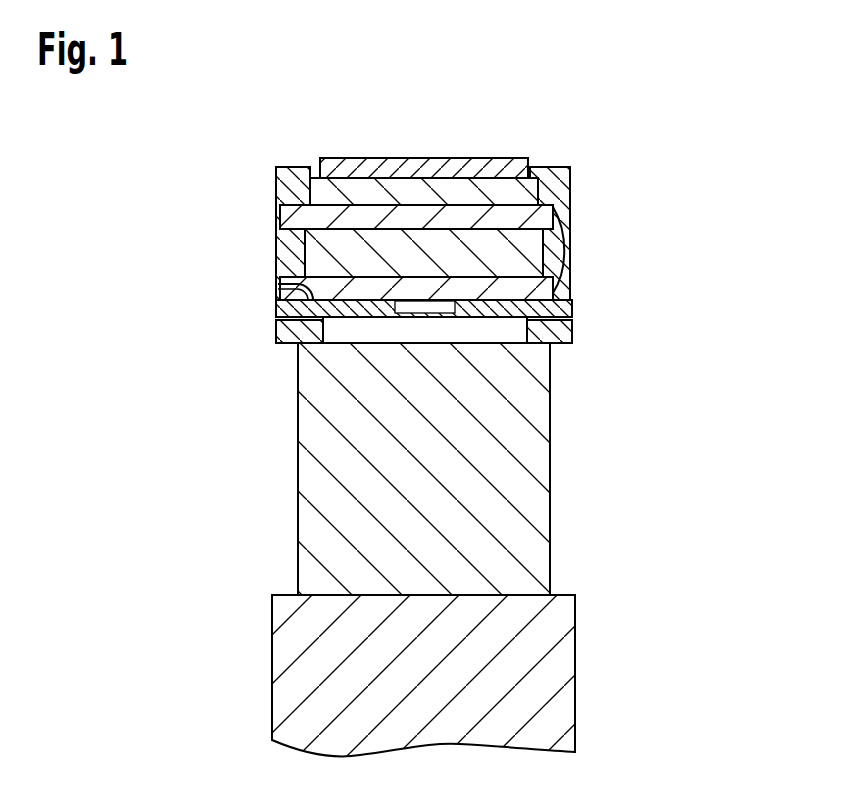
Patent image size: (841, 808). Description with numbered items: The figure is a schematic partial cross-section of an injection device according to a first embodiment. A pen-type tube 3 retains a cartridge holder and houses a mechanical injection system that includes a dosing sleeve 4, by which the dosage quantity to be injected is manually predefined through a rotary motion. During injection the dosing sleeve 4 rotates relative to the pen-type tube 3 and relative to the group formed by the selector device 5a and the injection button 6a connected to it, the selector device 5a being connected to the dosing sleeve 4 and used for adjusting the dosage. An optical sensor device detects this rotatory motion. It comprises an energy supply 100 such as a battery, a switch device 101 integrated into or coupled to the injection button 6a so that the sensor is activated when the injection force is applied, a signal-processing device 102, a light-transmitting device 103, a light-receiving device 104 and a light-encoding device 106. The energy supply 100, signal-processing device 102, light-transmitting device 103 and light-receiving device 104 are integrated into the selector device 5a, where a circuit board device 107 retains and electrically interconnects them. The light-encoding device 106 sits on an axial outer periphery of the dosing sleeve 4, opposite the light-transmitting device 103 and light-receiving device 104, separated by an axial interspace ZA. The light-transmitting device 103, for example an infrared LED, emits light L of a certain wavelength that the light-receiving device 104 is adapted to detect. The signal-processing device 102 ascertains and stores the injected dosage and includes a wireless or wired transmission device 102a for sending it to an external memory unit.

The pen-type tube 3 is at (300, 651).
The dosing sleeve 4 is at (318, 471).
The selector device 5a is at (568, 192).
The injection button 6a is at (488, 166).
The energy supply 100 is at (312, 242).
The switch device 101 is at (370, 166).
The signal-processing device 102 is at (455, 312).
The transmission device 102a is at (425, 307).
The light-transmitting device 103 is at (283, 300).
The light-receiving device 104 is at (283, 293).
The light-encoding device 106 is at (277, 333).
The circuit board device 107 is at (570, 283).
The light L is at (280, 317).
The axial interspace ZA is at (482, 337).